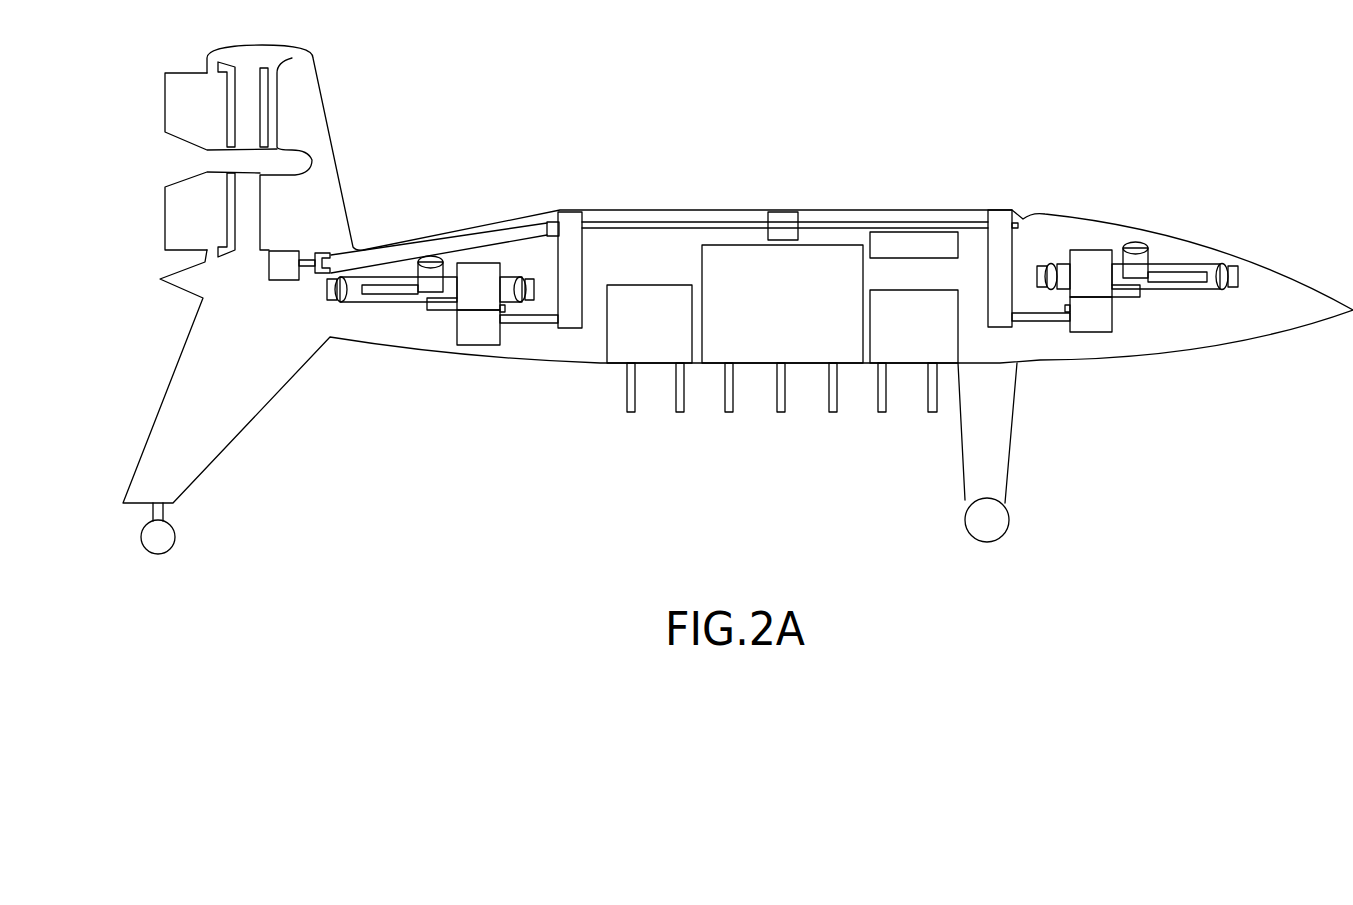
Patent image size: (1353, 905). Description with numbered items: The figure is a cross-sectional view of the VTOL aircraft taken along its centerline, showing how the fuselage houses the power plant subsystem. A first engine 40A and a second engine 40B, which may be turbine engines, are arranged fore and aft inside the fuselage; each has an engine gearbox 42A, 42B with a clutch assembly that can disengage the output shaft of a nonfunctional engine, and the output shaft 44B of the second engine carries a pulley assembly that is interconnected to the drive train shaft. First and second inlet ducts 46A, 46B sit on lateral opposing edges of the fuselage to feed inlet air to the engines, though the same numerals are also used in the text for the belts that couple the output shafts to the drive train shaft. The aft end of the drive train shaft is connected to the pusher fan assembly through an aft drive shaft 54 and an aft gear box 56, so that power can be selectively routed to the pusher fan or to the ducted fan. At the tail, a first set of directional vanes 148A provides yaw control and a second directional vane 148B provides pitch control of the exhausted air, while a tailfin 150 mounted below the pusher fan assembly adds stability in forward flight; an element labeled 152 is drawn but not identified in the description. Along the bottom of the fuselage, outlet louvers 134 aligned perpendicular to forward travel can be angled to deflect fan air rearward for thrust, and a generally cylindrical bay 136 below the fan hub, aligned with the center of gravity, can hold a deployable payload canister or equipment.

The first set of directional vanes 148A is at (180, 98).
The second directional vane 148B is at (204, 163).
The aft gear box 56 is at (290, 254).
The aft drive shaft 54 is at (483, 230).
The second inlet duct 46B is at (572, 268).
The second engine 40B is at (375, 310).
The engine gearbox 42B is at (469, 333).
The output shaft of second engine 44B is at (537, 325).
The tailfin 150 is at (925, 225).
The rail mount 152 is at (780, 225).
The first inlet duct 46A is at (1003, 257).
The first engine 40A is at (1173, 268).
The engine gearbox 42A is at (1098, 323).
The outlet louvers 134 is at (680, 412).
The bay 136 is at (802, 365).